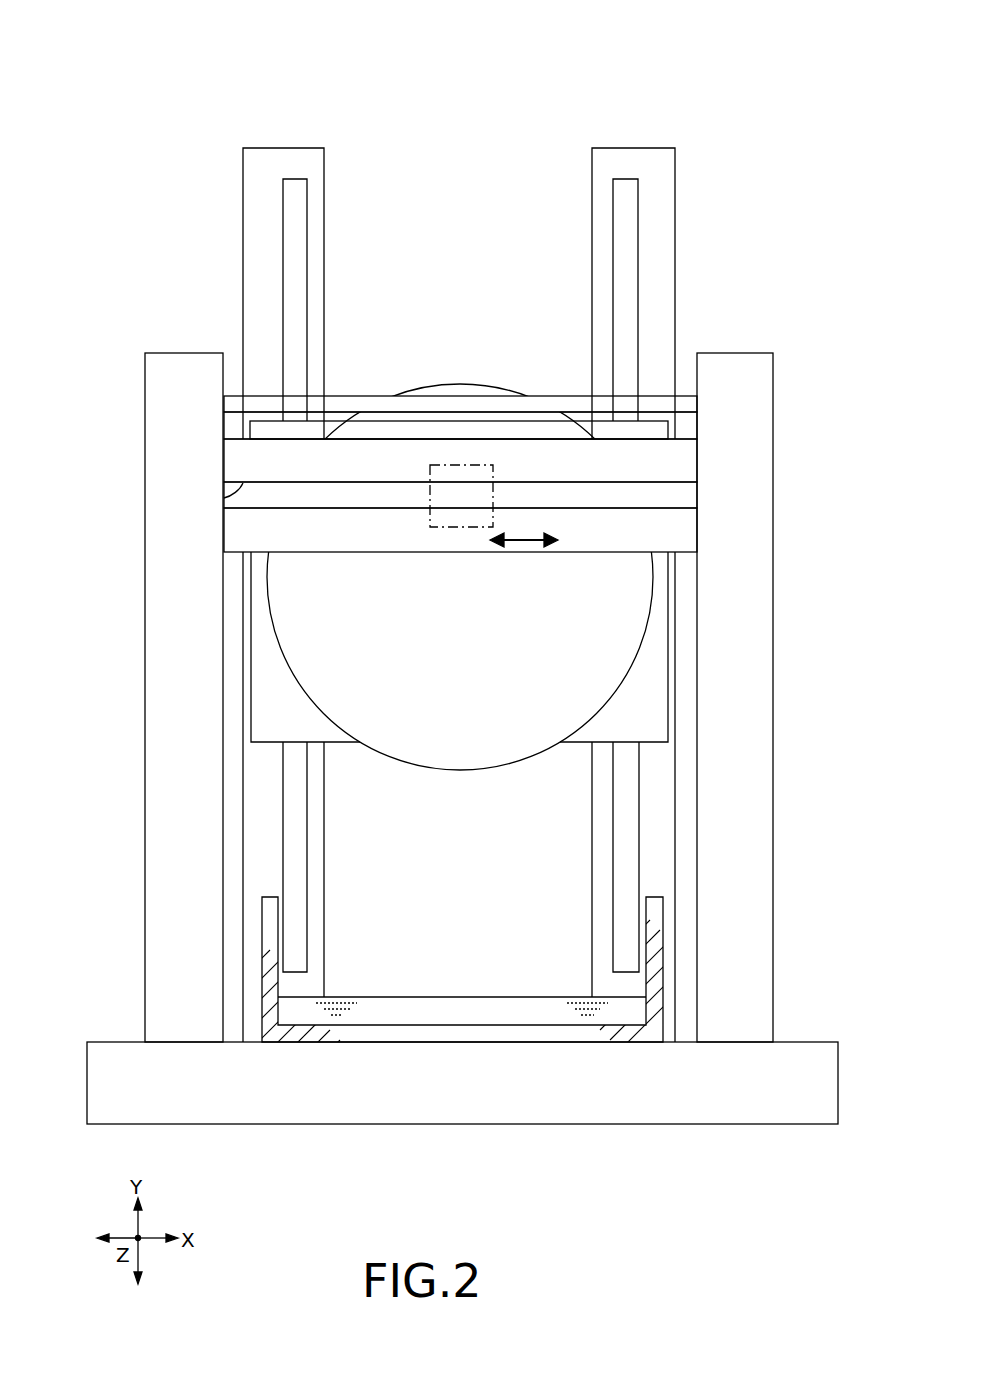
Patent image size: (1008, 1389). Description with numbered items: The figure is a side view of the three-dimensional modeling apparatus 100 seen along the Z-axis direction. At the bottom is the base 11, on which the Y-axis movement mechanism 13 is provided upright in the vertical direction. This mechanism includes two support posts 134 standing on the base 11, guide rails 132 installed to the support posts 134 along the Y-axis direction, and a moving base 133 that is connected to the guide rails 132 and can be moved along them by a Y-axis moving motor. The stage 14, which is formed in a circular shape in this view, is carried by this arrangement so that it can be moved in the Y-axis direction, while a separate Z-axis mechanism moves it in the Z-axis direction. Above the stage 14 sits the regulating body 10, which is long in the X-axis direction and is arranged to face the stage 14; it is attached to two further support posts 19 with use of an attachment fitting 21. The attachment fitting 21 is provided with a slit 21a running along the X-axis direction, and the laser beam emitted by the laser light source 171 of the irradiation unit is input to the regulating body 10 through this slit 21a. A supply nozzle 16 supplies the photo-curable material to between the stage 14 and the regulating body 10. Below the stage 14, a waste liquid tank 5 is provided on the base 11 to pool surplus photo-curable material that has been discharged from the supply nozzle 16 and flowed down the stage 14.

The three-dimensional modeling apparatus 100 is at (463, 76).
The base 11 is at (468, 1124).
The support posts 19 is at (155, 617).
The support posts 134 is at (316, 218).
The guide rails 132 is at (298, 270).
The moving base 133 is at (288, 731).
The supply nozzle 16 is at (580, 395).
The attachment fitting 21 is at (684, 459).
The regulating body 10 is at (684, 494).
The slit 21a is at (223, 497).
The laser light source 171 is at (463, 470).
The stage 14 is at (455, 755).
The Y-axis movement mechanism 13 is at (563, 770).
The waste liquid tank 5 is at (655, 943).